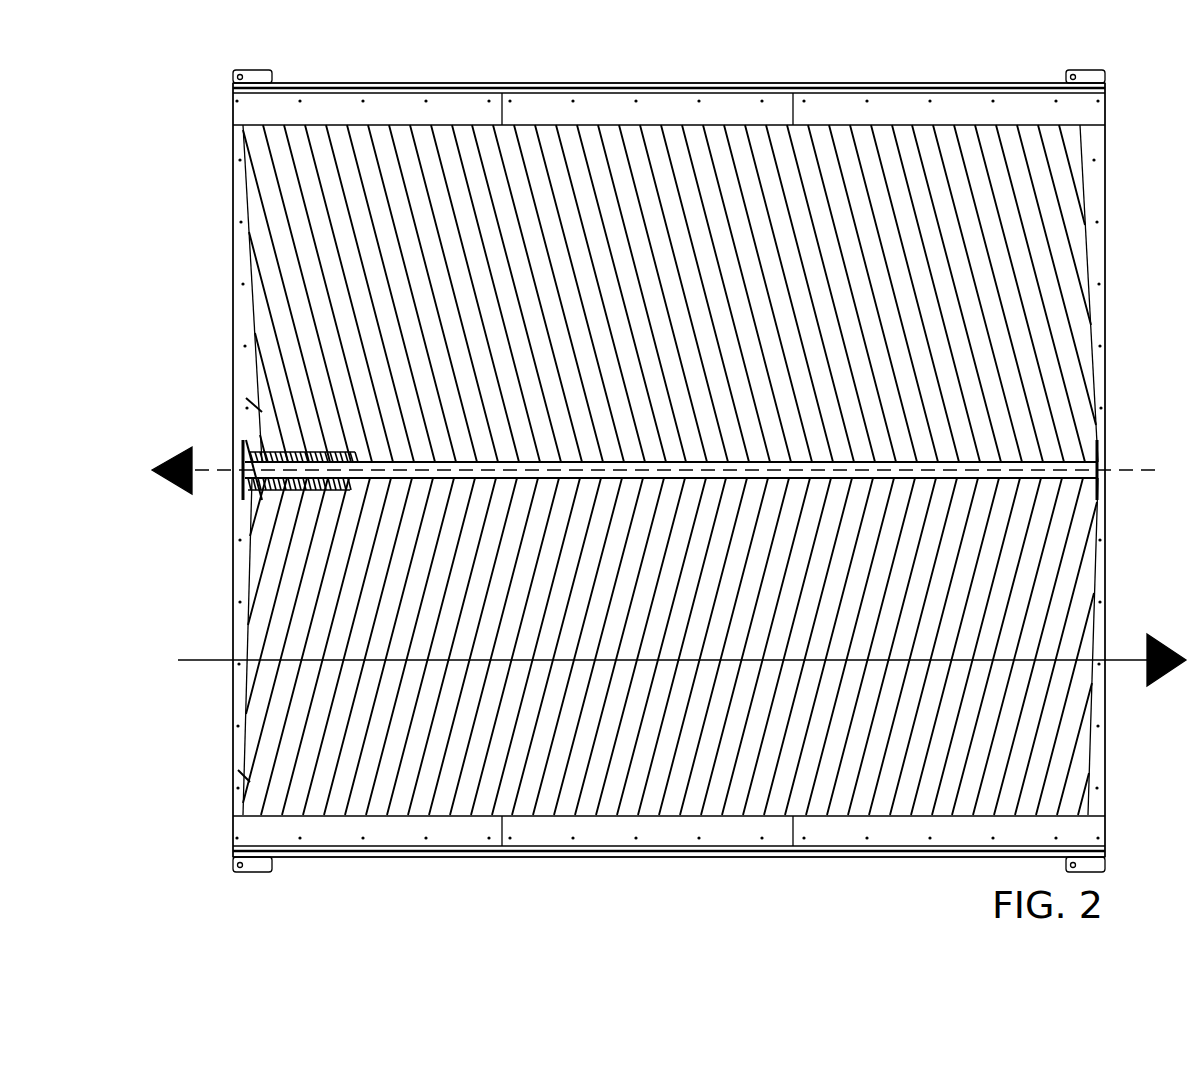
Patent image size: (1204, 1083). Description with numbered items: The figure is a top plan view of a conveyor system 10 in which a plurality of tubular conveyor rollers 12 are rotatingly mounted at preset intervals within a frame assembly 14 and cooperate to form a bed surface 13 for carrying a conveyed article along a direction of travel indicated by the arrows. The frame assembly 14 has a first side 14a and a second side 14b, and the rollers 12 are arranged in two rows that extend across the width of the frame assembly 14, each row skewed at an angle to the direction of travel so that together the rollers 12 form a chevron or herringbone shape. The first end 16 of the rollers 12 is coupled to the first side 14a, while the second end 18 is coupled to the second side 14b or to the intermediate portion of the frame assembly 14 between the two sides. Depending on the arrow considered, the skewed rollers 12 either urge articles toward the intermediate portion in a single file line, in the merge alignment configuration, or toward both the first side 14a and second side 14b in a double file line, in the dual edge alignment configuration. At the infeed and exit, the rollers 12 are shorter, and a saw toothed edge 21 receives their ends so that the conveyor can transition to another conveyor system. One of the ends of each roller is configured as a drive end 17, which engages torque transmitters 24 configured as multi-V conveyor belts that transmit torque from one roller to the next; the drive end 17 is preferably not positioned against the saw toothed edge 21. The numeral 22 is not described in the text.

The conveyor system 10 is at (190, 80).
The tubular conveyor rollers 12 is at (1043, 236).
The bed surface 13 is at (1063, 432).
The frame assembly 14 is at (1085, 118).
The first side 14a is at (845, 858).
The second side 14b is at (903, 82).
The first end 16 is at (1030, 470).
The drive end 17 is at (292, 497).
The second end 18 is at (275, 403).
The saw toothed edge 21 is at (240, 396).
The rail panel 22 is at (541, 831).
The torque transmitters 24 is at (358, 462).